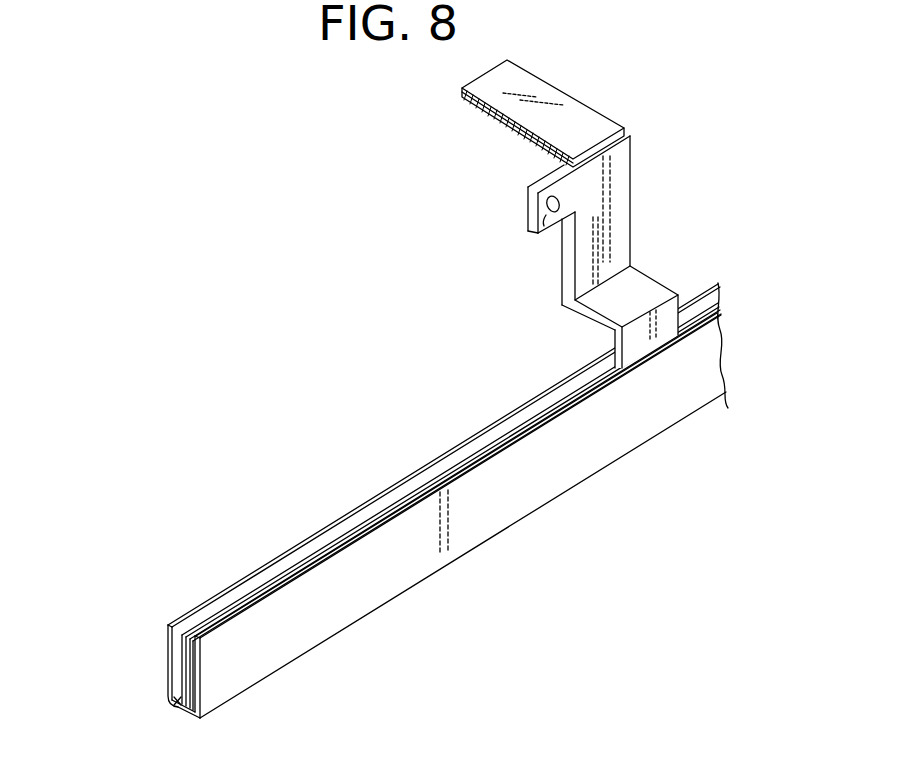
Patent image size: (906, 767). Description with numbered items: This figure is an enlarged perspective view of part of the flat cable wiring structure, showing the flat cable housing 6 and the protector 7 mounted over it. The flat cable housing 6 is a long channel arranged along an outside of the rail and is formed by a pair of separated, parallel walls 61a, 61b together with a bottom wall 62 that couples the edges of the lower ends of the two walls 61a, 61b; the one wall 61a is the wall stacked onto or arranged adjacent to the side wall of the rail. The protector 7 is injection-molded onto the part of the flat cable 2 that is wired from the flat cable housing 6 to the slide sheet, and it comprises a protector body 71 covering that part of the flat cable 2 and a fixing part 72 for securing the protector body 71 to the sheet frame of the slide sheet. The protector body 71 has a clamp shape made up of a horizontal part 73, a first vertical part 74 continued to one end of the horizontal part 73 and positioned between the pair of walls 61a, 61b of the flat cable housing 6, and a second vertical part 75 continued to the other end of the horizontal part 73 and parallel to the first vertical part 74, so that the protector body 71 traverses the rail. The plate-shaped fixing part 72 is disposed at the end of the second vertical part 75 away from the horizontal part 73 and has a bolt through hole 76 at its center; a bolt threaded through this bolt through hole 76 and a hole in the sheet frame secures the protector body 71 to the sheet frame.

The flat cable 2 is at (563, 112).
The flat cable housing 6 is at (381, 506).
The wall 61a is at (168, 655).
The wall 61b is at (218, 688).
The bottom wall 62 is at (168, 692).
The protector 7 is at (619, 252).
The protector body 71 is at (619, 252).
The fixing part 72 is at (508, 223).
The horizontal part 73 is at (636, 292).
The first vertical part 74 is at (670, 323).
The second vertical part 75 is at (595, 220).
The bolt through hole 76 is at (547, 202).